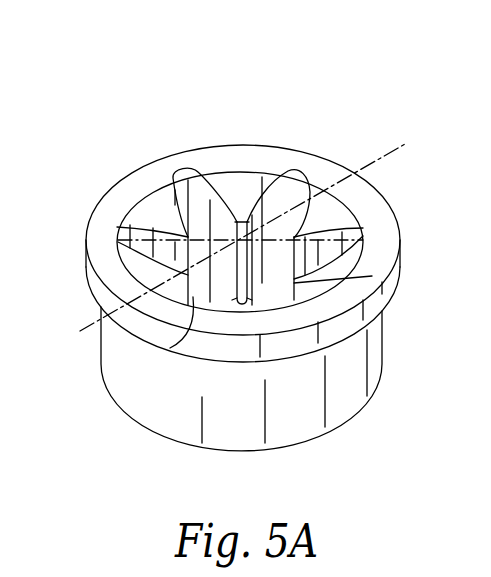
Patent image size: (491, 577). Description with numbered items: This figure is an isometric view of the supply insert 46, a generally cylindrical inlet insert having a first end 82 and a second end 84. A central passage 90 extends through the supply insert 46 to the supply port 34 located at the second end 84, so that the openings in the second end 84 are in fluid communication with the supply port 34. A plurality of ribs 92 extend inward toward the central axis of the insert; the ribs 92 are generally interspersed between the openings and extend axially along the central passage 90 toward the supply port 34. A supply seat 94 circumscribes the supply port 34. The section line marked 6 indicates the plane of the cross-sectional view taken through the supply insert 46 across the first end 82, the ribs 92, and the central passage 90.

The retaining ring assembly 46 is at (252, 77).
The flange 82 is at (103, 166).
The central axis / tube 34 is at (224, 241).
The resilient fingers 92 is at (242, 205).
The central opening 90 is at (277, 205).
The annular top surface 94 is at (376, 238).
The cylindrical body 84 is at (138, 462).
The section line 6- 6 is at (60, 299).